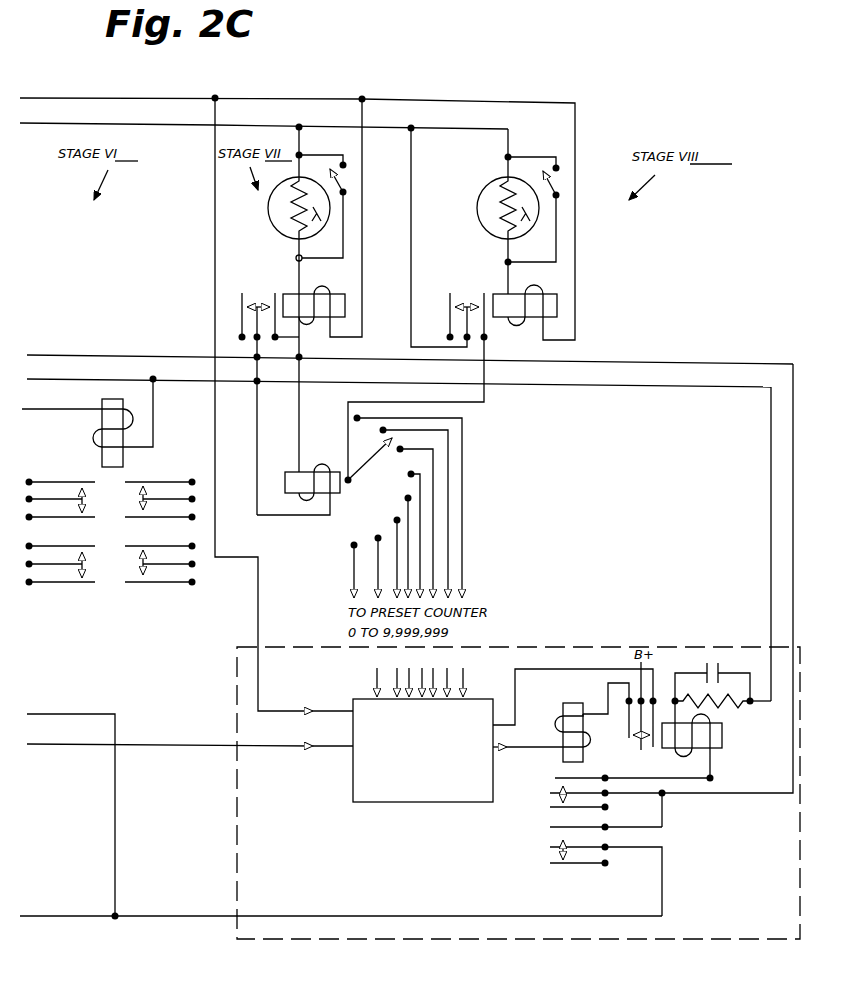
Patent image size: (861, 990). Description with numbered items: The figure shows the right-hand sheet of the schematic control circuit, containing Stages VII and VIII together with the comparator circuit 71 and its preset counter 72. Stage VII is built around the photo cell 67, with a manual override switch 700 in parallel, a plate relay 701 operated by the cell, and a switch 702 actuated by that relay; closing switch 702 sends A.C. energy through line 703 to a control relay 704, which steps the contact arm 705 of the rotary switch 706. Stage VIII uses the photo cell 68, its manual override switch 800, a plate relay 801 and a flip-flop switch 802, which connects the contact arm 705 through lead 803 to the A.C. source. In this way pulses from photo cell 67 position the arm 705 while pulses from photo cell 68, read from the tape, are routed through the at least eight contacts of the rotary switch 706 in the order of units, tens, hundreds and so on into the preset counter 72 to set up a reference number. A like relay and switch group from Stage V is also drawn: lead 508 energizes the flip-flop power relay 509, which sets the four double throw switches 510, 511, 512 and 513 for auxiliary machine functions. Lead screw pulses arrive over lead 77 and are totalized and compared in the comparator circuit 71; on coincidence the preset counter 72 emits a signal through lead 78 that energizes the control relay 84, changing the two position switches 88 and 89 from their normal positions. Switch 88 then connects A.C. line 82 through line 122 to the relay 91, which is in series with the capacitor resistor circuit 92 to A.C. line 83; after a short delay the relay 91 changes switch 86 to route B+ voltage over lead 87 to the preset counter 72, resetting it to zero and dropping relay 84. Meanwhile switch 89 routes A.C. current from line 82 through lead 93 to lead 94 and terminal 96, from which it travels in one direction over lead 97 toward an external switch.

The photo cell 67 is at (284, 215).
The photo cell 68 is at (490, 214).
The comparator circuit 71 is at (330, 939).
The preset counter 72 is at (352, 779).
The lead 77 is at (228, 747).
The lead 78 is at (552, 750).
The A.C. line 82 is at (794, 498).
The A.C. line 83 is at (771, 572).
The control relay 84 is at (583, 701).
The switch 86 is at (641, 746).
The lead 87 is at (600, 673).
The two position switch 88 is at (561, 791).
The two position switch 89 is at (560, 849).
The relay 91 is at (723, 739).
The capacitor resistor circuit 92 is at (696, 668).
The lead 93 is at (663, 812).
The lead 94 is at (663, 899).
The terminal 96 is at (117, 917).
The lead 97 is at (116, 843).
The line 122 is at (690, 781).
The lead 508 is at (42, 411).
The flip-flop power relay 509 is at (104, 422).
The double throw switch 510 is at (84, 502).
The double throw switch 511 is at (141, 495).
The double throw switch 512 is at (85, 566).
The double throw switch 513 is at (140, 560).
The manual override switch 700 is at (346, 188).
The plate relay 701 is at (307, 297).
The switch 702 is at (247, 305).
The line 703 is at (299, 432).
The control relay 704 is at (308, 472).
The contact arm 705 is at (404, 507).
The rotary switch 706 is at (366, 521).
The manual override switch 800 is at (560, 190).
The plate relay 801 is at (506, 297).
The flip-flop switch 802 is at (456, 305).
The lead 803 is at (486, 375).